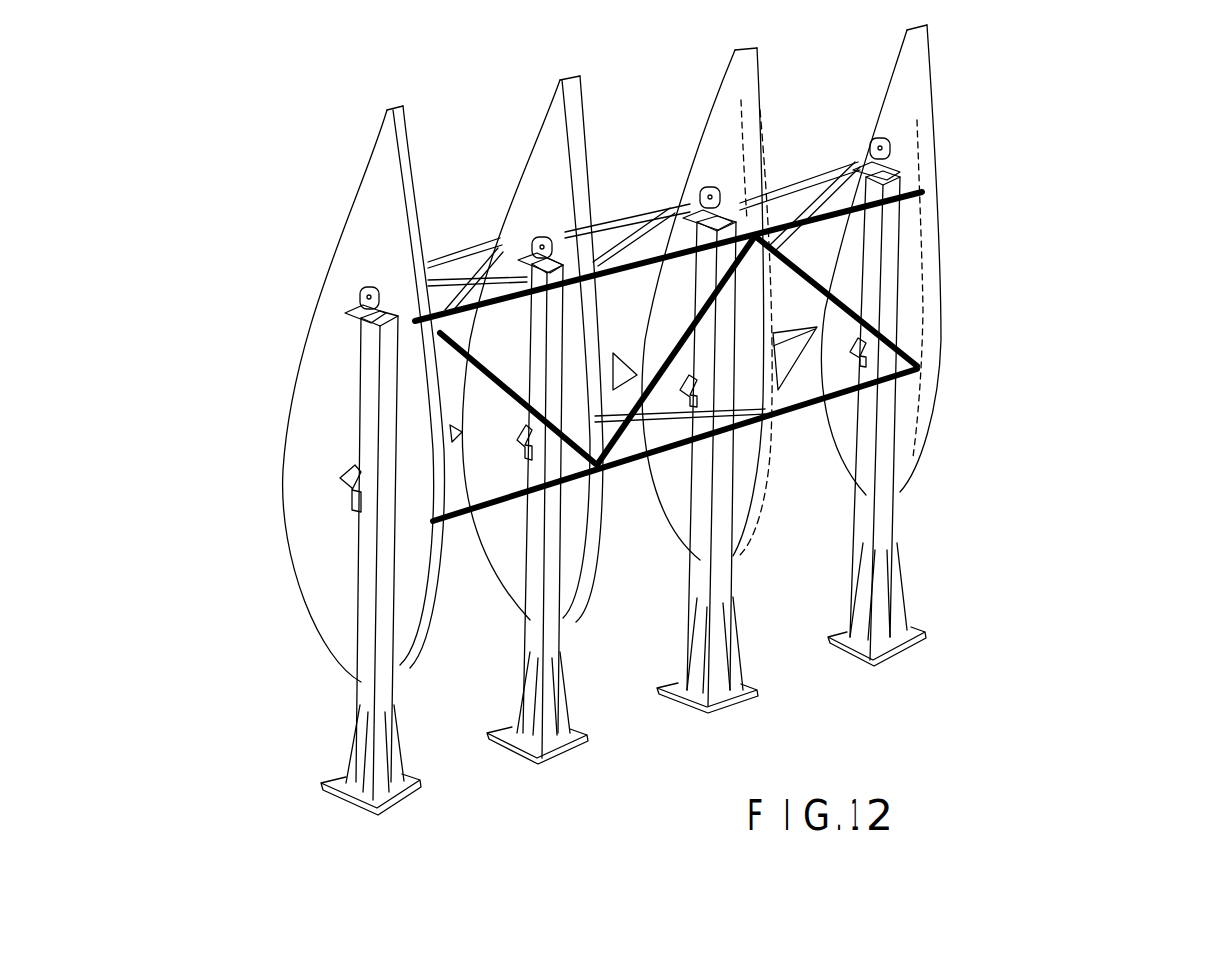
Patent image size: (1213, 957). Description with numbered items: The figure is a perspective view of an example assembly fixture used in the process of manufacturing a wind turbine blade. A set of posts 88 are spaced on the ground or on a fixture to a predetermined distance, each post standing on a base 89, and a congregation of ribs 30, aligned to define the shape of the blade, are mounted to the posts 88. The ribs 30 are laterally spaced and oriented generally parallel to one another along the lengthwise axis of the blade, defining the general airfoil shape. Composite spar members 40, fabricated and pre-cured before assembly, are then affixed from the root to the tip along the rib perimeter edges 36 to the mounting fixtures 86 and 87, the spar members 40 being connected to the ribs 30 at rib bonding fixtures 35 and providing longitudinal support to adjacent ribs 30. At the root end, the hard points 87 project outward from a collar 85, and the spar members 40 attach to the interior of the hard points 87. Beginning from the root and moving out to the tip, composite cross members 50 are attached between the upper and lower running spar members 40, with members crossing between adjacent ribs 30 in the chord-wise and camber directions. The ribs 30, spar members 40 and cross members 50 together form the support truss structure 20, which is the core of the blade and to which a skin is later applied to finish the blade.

The support truss structure 20 is at (1076, 150).
The ribs 30 is at (933, 117).
The rib bonding fixtures 35 is at (907, 373).
The outer perimeter edges 36 is at (403, 162).
The spar members 40 is at (912, 198).
The cross members 50 is at (912, 356).
The collar 85 is at (1036, 437).
The mounting fixtures 86 is at (348, 480).
The hard points 87 is at (350, 311).
The posts 88 is at (897, 541).
The base plate 89 is at (908, 634).